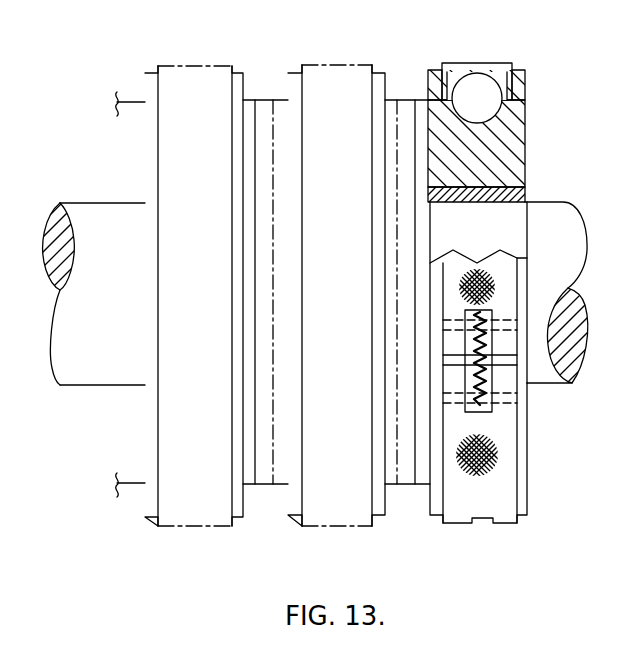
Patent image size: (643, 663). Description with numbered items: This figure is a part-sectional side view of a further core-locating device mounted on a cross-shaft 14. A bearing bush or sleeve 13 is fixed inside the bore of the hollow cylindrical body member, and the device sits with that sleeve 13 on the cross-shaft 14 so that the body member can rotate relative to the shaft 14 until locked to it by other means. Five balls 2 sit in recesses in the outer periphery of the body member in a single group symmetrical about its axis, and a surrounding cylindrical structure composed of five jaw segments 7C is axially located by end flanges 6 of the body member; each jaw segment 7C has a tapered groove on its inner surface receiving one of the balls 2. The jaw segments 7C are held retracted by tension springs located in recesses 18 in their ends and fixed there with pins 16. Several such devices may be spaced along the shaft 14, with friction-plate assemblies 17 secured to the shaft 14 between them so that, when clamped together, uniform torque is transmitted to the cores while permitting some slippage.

The ball 2 is at (477, 83).
The end flange 6 is at (523, 84).
The jaw segment 7C is at (462, 76).
The bearing bush or sleeve 13 is at (525, 190).
The cross-shaft 14 is at (542, 218).
The pin 16 is at (508, 398).
The friction-plate assembly 17 is at (402, 107).
The recess 18 is at (493, 413).